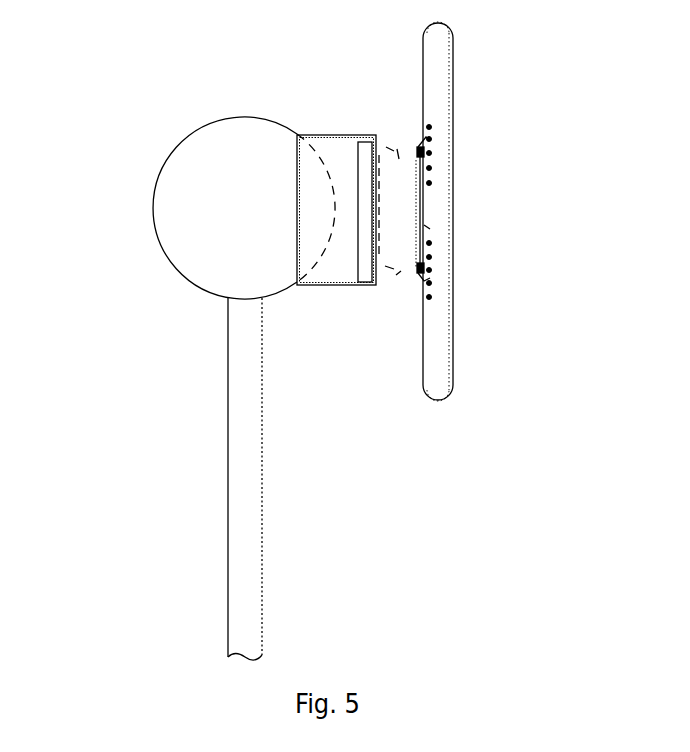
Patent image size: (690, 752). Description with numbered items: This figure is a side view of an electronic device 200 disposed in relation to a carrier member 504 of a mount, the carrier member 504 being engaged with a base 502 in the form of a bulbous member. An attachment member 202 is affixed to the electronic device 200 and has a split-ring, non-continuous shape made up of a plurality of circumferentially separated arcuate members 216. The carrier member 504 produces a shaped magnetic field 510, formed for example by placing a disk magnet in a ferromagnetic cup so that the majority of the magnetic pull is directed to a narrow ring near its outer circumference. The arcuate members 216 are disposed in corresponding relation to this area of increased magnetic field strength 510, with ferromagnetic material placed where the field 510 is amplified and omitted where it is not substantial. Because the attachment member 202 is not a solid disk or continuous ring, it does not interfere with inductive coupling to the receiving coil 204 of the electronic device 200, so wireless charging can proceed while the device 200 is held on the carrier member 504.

The electronic device 200 is at (443, 113).
The attachment member 202 is at (430, 282).
The receiving coil 204 is at (430, 167).
The arcuate members 216 is at (430, 227).
The base 502 is at (187, 173).
The carrier member 504 is at (337, 245).
The magnetic field 510 is at (392, 283).